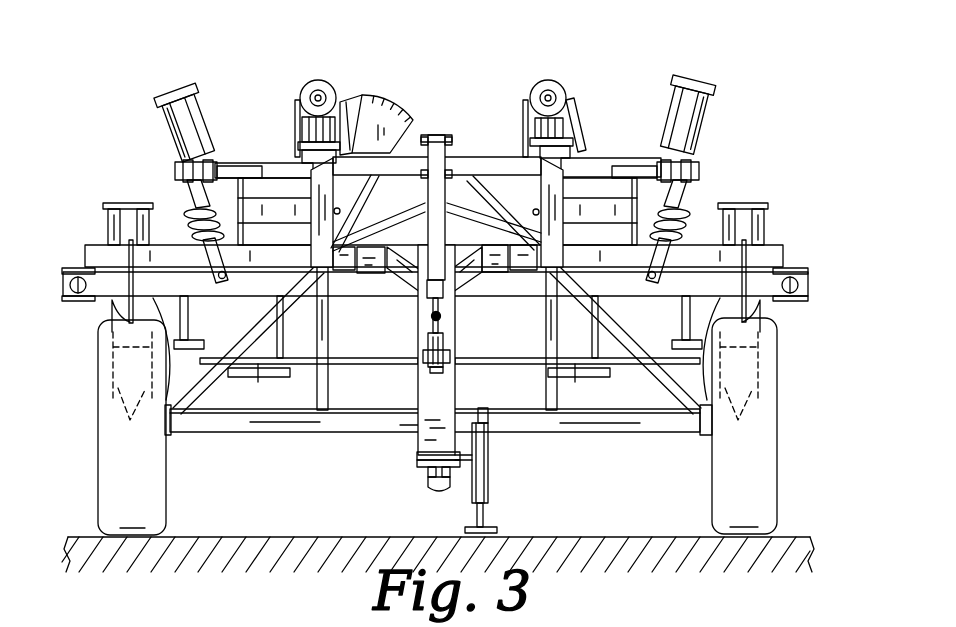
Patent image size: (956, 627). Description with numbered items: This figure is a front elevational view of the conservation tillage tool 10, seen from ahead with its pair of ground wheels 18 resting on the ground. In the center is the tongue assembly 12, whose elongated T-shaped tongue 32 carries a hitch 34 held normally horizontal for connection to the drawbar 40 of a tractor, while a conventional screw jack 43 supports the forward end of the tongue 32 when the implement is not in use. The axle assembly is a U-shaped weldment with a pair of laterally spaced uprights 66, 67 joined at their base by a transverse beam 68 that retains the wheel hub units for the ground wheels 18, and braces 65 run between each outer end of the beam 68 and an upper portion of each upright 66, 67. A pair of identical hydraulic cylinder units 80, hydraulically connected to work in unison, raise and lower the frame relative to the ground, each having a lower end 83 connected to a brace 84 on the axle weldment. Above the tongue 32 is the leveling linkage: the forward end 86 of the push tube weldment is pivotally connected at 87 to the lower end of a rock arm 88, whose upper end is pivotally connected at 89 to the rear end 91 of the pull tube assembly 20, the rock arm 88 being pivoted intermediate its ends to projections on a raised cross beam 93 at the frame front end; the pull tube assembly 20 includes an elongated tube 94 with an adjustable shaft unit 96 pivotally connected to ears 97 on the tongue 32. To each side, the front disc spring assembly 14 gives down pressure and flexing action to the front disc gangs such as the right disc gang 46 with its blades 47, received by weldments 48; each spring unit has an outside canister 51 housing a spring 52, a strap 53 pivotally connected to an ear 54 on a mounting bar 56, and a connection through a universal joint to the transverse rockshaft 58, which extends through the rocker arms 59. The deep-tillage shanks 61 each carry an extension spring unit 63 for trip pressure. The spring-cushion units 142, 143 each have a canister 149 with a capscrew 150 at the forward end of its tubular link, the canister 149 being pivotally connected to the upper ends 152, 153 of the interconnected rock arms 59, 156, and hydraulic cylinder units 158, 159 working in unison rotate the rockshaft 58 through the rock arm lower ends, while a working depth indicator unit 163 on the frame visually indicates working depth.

The conservation tillage tool 10 is at (630, 42).
The tongue assembly 12 is at (376, 448).
The front disc spring assembly 14 is at (203, 85).
The ground wheels 18 is at (105, 488).
The pull tube assembly 20 is at (452, 228).
The tongue 32 is at (455, 393).
The hitch 34 is at (418, 458).
The drawbar 40 is at (420, 478).
The screw jack 43 is at (487, 483).
The right disc gang 46 is at (101, 373).
The blades 47 is at (112, 392).
The weldments 48 is at (85, 247).
The outside canister 51 is at (175, 125).
The spring 52 is at (183, 183).
The strap 53 is at (195, 237).
The ear 54 is at (210, 288).
The mounting bar 56 is at (108, 290).
The rockshaft 58 is at (615, 158).
The rocker arms 59 is at (297, 135).
The shanks 61 is at (113, 313).
The extension spring unit 63 is at (102, 208).
The braces 65 is at (236, 345).
The upright 66 is at (545, 323).
The upright 67 is at (330, 361).
The transverse beam 68 is at (290, 425).
The hydraulic cylinder units 80 is at (329, 304).
The lower end 83 is at (283, 330).
The brace 84 is at (238, 377).
The forward end 86 is at (380, 250).
The pivotal connection 87 is at (424, 207).
The rock arm 88 is at (453, 170).
The pivotal connection 89 is at (450, 135).
The rear end 91 is at (432, 134).
The raised cross beam 93 is at (468, 158).
The elongated tube 94 is at (427, 280).
The adjustable shaft unit 96 is at (431, 320).
The ears 97 is at (423, 358).
The spring-cushion unit 142 is at (294, 76).
The spring-cushion unit 143 is at (563, 63).
The canister 149 is at (315, 93).
The capscrew 150 is at (302, 97).
The upper end 152 is at (293, 105).
The upper end 153 is at (340, 100).
The rock arm 156 is at (345, 108).
The hydraulic cylinder unit 158 is at (530, 210).
The hydraulic cylinder unit 159 is at (338, 216).
The working depth indicator unit 163 is at (396, 83).